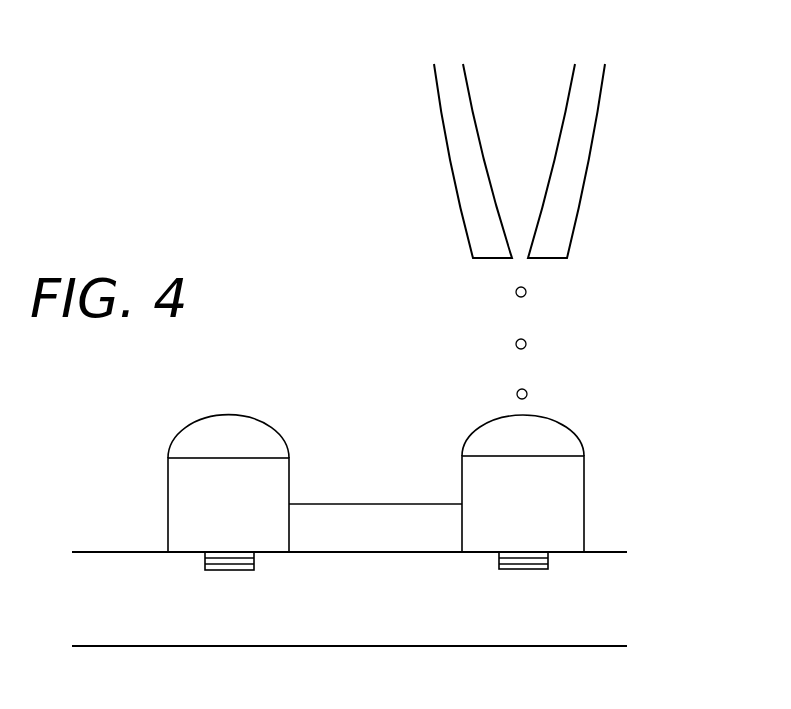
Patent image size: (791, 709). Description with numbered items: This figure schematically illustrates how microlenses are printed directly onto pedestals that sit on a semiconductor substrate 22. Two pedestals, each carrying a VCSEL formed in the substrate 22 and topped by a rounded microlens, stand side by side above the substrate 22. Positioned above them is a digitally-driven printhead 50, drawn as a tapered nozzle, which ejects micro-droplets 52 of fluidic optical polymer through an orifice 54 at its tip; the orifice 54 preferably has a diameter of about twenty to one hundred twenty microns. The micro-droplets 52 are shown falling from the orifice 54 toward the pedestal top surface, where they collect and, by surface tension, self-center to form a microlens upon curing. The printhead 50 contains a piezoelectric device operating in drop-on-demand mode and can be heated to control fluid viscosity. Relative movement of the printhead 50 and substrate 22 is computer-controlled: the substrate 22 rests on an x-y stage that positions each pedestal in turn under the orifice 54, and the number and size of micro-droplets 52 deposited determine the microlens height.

The semiconductor substrate 22 is at (386, 617).
The digitally-driven printhead 50 is at (568, 190).
The micro-droplets 52 is at (527, 345).
The orifice 54 is at (520, 259).